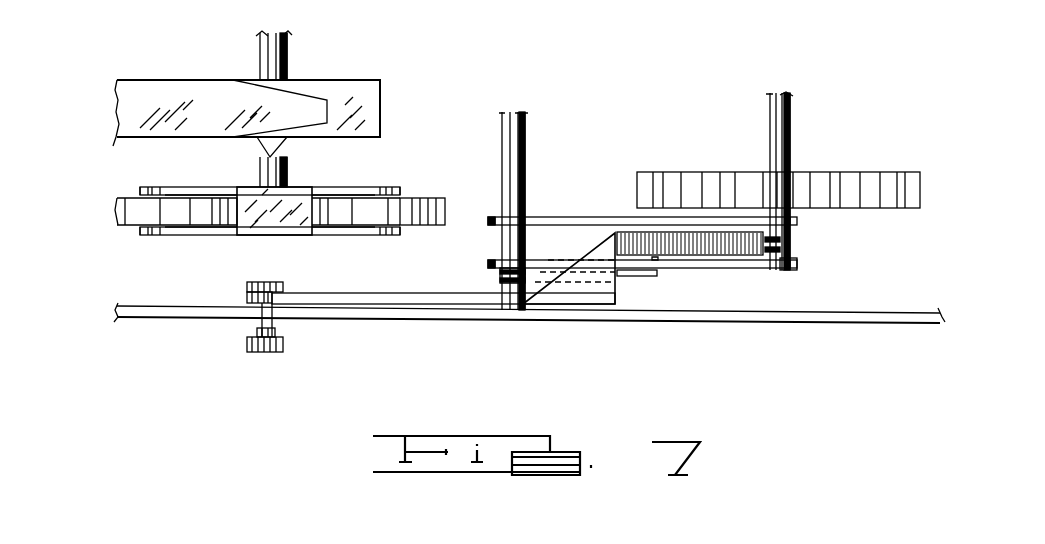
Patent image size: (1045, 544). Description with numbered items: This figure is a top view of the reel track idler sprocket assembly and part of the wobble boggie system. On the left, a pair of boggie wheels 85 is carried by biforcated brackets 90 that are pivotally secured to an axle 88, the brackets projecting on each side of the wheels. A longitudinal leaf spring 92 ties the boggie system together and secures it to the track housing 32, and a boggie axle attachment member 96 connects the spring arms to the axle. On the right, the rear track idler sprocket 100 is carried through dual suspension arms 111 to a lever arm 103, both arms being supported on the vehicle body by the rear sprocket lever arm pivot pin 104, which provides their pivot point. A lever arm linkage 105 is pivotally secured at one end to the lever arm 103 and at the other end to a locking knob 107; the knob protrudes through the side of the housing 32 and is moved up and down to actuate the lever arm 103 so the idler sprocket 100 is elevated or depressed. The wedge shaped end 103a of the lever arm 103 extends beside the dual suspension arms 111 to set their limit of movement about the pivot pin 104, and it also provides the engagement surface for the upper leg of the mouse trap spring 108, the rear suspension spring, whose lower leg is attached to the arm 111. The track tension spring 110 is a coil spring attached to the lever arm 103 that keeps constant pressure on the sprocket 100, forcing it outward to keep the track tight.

The track housing 32 is at (700, 322).
The boggie wheels 85 is at (413, 200).
The axle 88 is at (287, 163).
The biforcated brackets 90 is at (350, 187).
The longitudinal leaf springs 92 is at (222, 85).
The boggie axle attachment members 96 is at (283, 65).
The rear track idler sprocket 100 is at (888, 172).
The lever arm 103 is at (397, 292).
The wedge shaped end 103a is at (612, 240).
The rear sprocket lever arm pivot pin 104 is at (527, 146).
The lever arm linkage 105 is at (256, 285).
The locking knob 107 is at (262, 352).
The mouse trap spring 108 is at (635, 278).
The track tension spring 110 is at (713, 248).
The dual suspension arms 111 is at (608, 218).